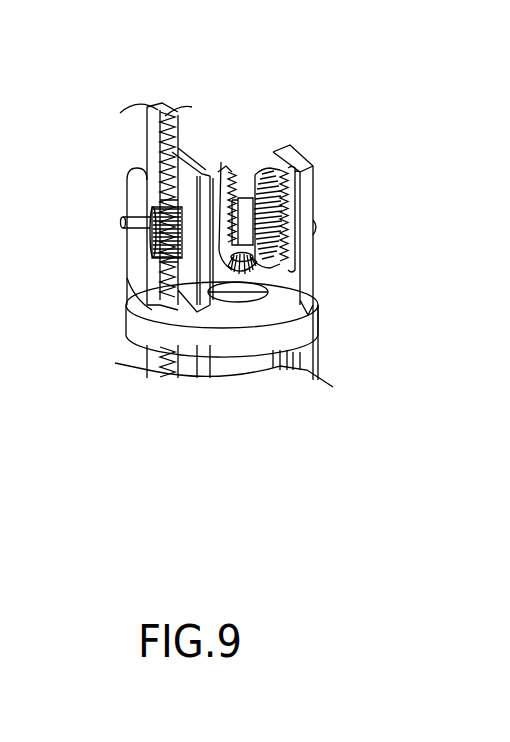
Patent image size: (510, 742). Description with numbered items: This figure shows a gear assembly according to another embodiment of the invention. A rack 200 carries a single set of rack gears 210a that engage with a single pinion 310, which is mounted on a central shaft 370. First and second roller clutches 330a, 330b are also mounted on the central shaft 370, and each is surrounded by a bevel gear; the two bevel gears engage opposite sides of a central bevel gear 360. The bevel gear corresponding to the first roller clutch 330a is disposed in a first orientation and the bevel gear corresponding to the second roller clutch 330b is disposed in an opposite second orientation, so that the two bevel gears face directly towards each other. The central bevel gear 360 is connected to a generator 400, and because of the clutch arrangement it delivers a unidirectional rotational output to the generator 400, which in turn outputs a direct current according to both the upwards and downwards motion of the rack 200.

The rack 200 is at (147, 124).
The rack gears 210a is at (148, 142).
The pinion 310 is at (143, 231).
The first roller clutch 330a is at (233, 193).
The second roller clutch 330b is at (263, 170).
The central shaft 370 is at (240, 198).
The central bevel gear 360 is at (265, 295).
The generator 400 is at (207, 370).